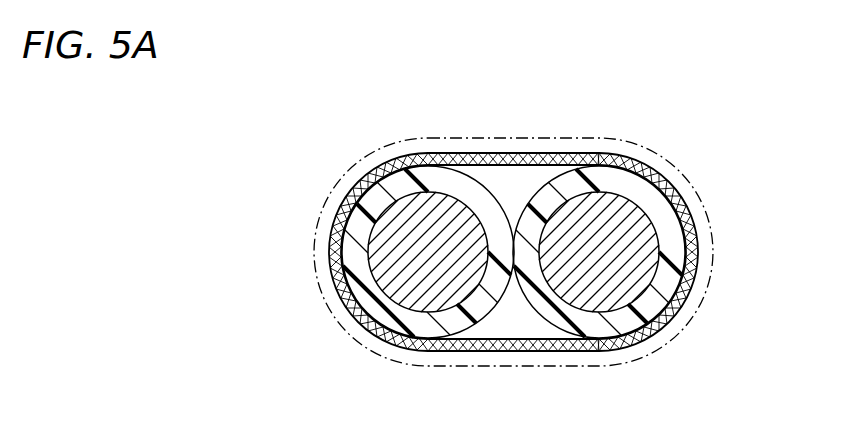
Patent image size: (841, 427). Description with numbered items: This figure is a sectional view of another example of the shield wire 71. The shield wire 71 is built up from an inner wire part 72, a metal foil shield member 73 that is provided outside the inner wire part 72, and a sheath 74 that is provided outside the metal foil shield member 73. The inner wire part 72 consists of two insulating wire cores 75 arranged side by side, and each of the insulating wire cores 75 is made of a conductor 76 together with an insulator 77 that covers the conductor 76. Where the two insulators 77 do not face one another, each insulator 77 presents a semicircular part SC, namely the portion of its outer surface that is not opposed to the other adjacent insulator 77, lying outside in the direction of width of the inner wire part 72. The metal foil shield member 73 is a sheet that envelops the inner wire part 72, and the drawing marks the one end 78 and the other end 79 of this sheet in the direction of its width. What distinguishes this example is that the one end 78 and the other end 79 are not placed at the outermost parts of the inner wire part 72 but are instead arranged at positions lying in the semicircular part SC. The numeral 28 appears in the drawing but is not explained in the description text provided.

The shield wire 71 is at (742, 148).
The inner wire part 72 is at (450, 56).
The metal foil shield member 73 is at (675, 300).
The sheath 74 is at (683, 327).
The insulating wire cores 75 is at (508, 93).
The conductors 76 is at (440, 195).
The insulators 77 is at (465, 193).
The one end 78 is at (442, 213).
The other end 79 is at (430, 350).
The sheath 28 is at (350, 168).
The semicircular part SC is at (690, 212).